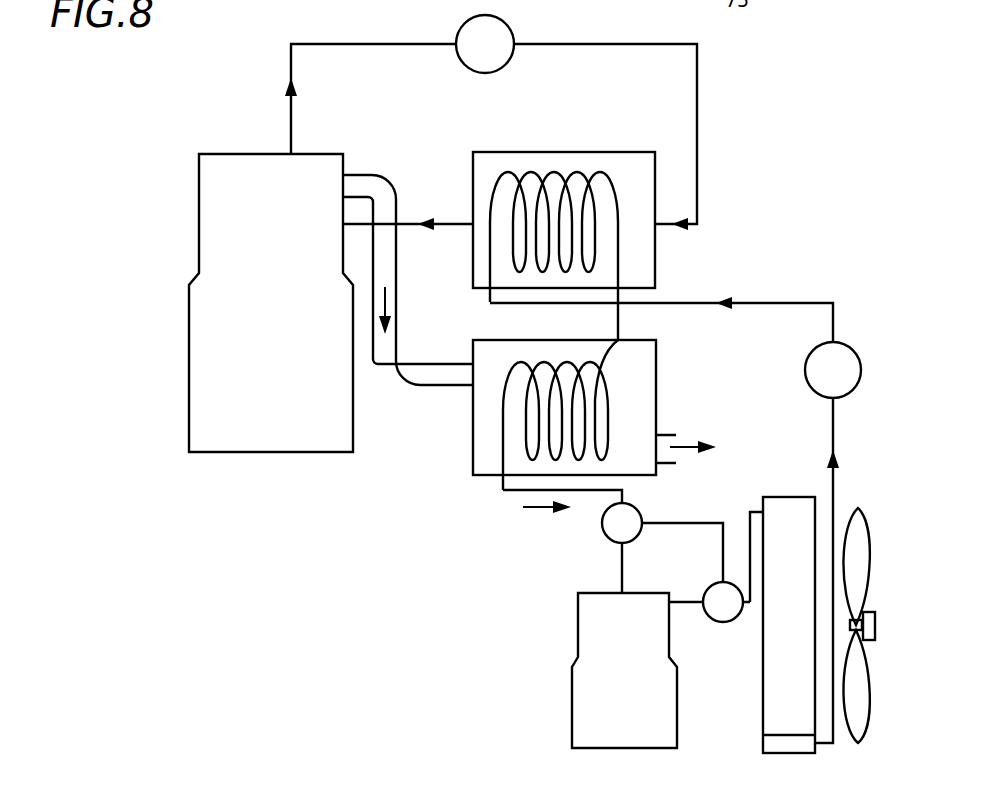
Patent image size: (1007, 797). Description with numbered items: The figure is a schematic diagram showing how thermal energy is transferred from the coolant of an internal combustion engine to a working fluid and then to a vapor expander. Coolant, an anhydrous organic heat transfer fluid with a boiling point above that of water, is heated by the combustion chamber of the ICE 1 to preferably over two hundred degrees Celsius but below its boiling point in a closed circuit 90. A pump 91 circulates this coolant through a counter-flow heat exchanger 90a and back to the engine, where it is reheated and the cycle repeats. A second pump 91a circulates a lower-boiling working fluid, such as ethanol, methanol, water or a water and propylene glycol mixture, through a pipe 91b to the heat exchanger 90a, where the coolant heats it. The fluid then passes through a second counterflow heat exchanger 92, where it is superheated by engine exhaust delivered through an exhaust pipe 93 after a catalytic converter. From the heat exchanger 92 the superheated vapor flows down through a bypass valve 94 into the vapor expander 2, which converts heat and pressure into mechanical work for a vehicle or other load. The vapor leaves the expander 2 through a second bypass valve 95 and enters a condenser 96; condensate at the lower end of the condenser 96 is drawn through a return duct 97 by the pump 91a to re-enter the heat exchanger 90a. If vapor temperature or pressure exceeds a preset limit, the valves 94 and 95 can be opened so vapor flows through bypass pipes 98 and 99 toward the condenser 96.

The ICE 1 is at (199, 199).
The vapor expander 2 is at (572, 686).
The closed circuit 90 is at (641, 43).
The counter-flow heat exchanger 90a is at (530, 152).
The pump 91 is at (458, 36).
The second pump 91a is at (805, 369).
The pipe 91b is at (797, 303).
The second counterflow heat exchanger 92 is at (656, 375).
The exhaust pipe 93 is at (392, 386).
The bypass valve 94 is at (601, 523).
The second bypass valve 95 is at (718, 622).
The condenser 96 is at (781, 694).
The return duct 97 is at (833, 440).
The bypass pipe 98 is at (699, 526).
The bypass pipe 99 is at (752, 522).